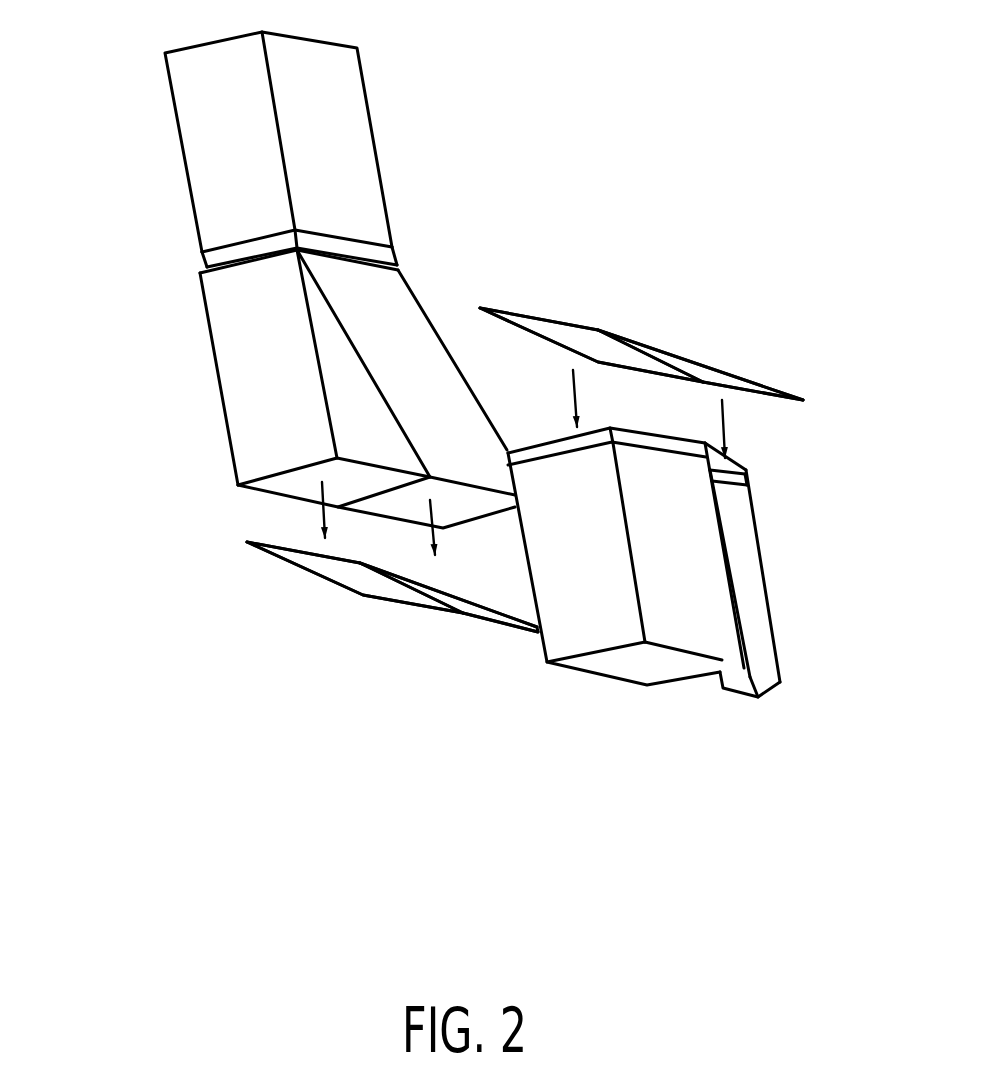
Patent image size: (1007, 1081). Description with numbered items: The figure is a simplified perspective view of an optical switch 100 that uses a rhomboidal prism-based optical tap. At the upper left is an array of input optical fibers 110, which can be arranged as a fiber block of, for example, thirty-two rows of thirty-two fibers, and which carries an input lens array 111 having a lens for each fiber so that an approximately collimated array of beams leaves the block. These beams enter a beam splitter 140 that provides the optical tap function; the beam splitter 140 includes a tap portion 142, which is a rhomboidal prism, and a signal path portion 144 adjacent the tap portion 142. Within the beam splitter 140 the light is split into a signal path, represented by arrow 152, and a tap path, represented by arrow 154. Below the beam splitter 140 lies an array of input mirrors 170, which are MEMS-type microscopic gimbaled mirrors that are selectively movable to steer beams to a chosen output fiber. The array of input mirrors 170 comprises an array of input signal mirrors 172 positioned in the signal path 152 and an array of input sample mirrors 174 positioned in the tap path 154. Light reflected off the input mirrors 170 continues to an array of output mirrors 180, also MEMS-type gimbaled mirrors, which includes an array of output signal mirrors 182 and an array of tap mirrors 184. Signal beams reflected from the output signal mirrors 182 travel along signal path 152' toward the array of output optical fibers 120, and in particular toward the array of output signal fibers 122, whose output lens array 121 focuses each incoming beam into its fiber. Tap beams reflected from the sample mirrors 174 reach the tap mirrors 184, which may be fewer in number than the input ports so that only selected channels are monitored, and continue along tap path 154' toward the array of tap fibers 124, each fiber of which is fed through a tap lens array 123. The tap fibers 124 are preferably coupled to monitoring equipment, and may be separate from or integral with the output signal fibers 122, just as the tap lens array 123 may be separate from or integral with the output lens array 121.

The optical switch 100 is at (523, 107).
The array of input optical fibers 110 is at (173, 97).
The input lens array 111 is at (203, 263).
The array of output optical fibers 120 is at (547, 662).
The output lens array 121 is at (726, 450).
The array of output signal fibers 122 is at (625, 668).
The tap lens array 123 is at (748, 486).
The array of tap fibers 124 is at (762, 658).
The beam splitter 140 is at (240, 382).
The tap portion 142 is at (390, 307).
The signal path portion 144 is at (231, 443).
The signal path 152 is at (281, 510).
The tap path 154 is at (474, 527).
The signal path 152' is at (630, 398).
The tap path 154' is at (779, 429).
The array of input mirrors 170 is at (278, 568).
The array of input signal mirrors 172 is at (382, 592).
The array of input sample mirrors 174 is at (493, 607).
The array of output mirrors 180 is at (617, 315).
The array of output signal mirrors 182 is at (556, 330).
The array of tap mirrors 184 is at (680, 350).